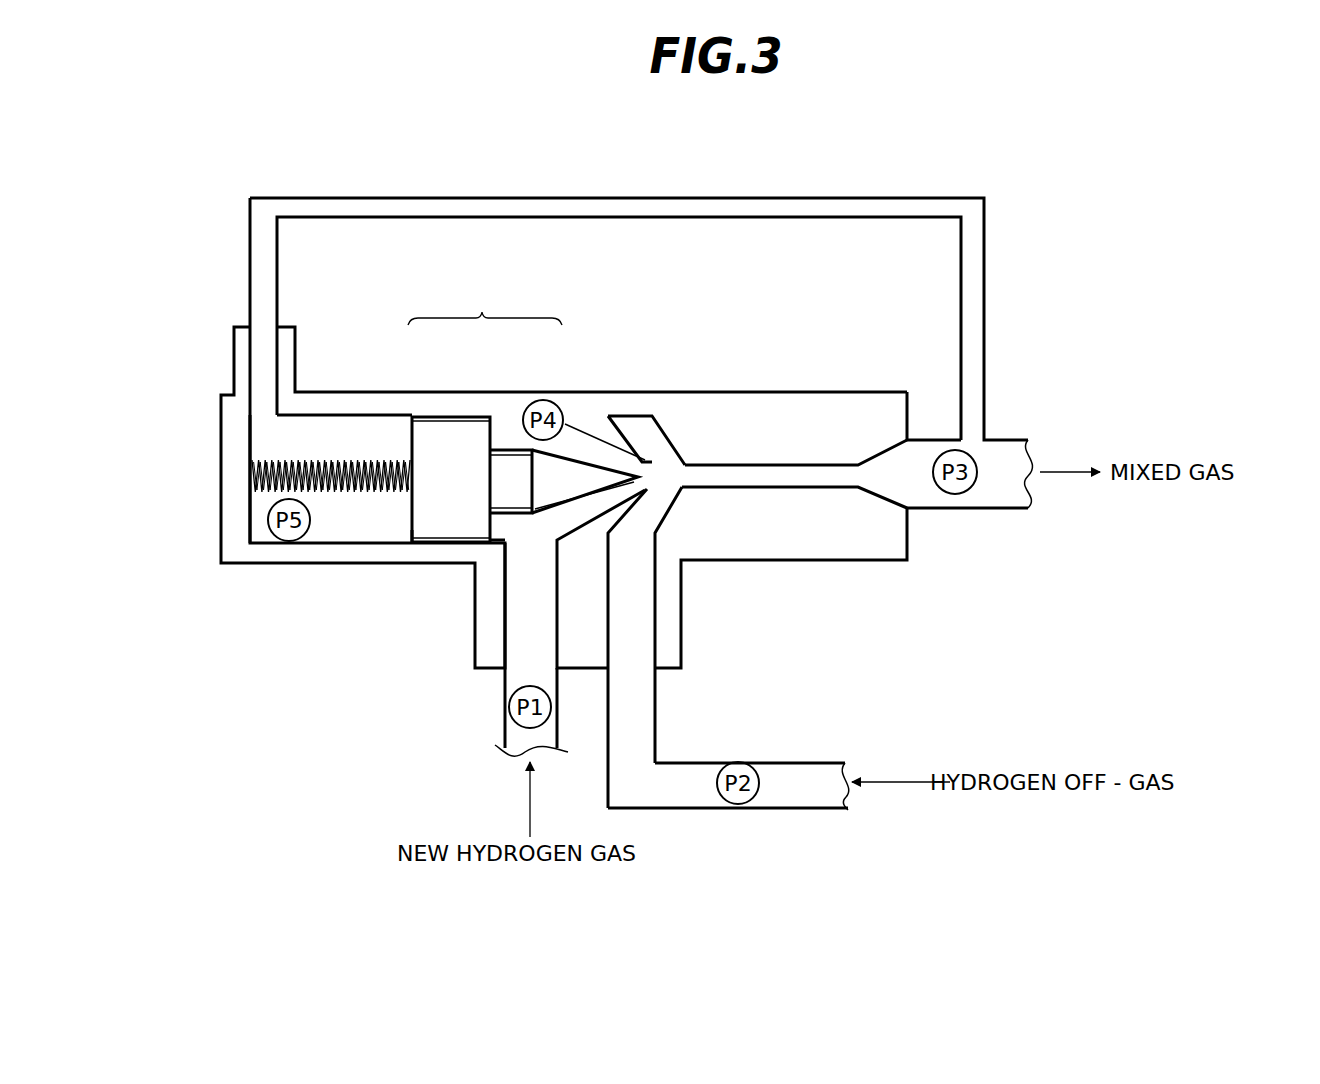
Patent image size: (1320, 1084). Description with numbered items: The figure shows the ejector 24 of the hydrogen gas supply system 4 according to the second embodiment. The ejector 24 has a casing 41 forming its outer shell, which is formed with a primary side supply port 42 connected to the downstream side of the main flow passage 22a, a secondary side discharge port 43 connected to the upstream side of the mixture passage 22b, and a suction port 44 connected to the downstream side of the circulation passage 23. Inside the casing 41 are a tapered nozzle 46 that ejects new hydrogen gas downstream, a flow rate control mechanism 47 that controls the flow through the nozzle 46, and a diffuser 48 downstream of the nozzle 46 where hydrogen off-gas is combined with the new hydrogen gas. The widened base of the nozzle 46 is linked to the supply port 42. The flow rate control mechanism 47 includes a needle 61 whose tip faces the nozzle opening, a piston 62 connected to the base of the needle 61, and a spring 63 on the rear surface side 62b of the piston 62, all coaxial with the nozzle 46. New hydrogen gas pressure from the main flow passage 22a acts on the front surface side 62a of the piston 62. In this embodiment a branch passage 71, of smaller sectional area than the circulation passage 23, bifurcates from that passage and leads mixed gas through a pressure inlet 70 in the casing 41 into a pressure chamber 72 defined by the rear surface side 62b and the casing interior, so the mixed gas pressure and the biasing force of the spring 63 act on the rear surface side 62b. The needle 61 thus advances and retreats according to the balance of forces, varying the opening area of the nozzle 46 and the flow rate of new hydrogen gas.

The hydrogen gas supply system 4 is at (255, 755).
The main flow passage 22a is at (520, 737).
The mixture passage 22b is at (1002, 492).
The circulation passage 23 is at (790, 800).
The ejector 24 is at (818, 566).
The casing 41 is at (877, 540).
The primary side supply port 42 is at (517, 622).
The secondary side discharge port 43 is at (885, 467).
The suction port 44 is at (633, 633).
The nozzle 46 is at (647, 460).
The flow rate control mechanism 47 is at (445, 414).
The diffuser 48 is at (788, 475).
The needle 61 is at (588, 472).
The piston 62 is at (448, 435).
The front surface side 62a is at (493, 530).
The rear surface side 62b is at (410, 527).
The spring 63 is at (342, 460).
The pressure inlet 70 is at (261, 362).
The branch passage 71 is at (675, 207).
The pressure chamber 72 is at (267, 447).